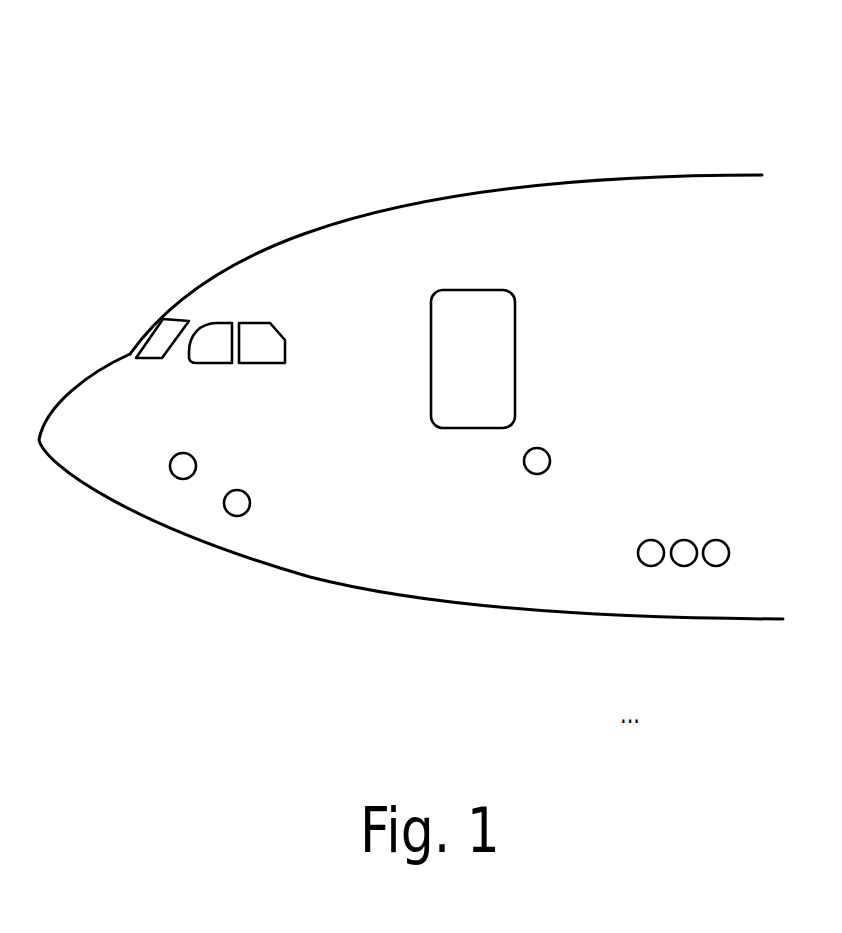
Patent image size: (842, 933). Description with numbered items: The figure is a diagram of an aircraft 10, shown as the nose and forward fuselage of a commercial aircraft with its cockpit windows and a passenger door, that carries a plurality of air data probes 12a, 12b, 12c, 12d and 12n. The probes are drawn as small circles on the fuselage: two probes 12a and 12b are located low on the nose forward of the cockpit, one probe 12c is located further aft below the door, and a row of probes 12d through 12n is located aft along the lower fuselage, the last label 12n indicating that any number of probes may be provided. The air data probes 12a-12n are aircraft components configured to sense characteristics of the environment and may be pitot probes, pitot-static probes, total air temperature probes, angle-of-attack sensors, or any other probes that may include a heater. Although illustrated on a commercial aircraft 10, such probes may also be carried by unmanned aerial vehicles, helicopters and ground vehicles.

The aircraft 10 is at (648, 123).
The air data probe 12a is at (233, 516).
The air data probe 12b is at (191, 455).
The air data probe 12c is at (537, 474).
The air data probe 12d is at (651, 566).
The air data probe 12n is at (716, 566).